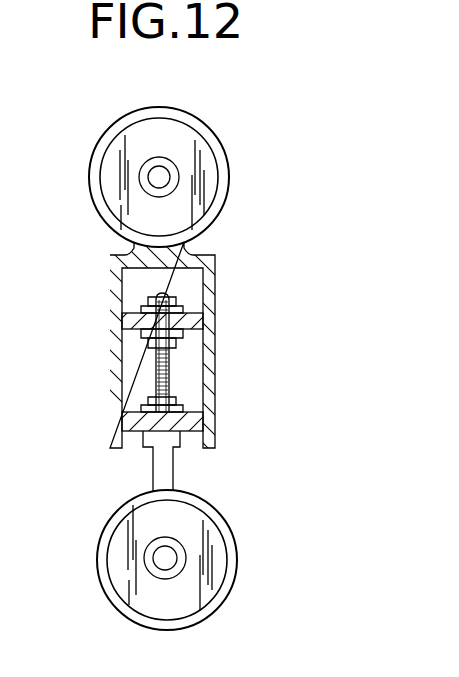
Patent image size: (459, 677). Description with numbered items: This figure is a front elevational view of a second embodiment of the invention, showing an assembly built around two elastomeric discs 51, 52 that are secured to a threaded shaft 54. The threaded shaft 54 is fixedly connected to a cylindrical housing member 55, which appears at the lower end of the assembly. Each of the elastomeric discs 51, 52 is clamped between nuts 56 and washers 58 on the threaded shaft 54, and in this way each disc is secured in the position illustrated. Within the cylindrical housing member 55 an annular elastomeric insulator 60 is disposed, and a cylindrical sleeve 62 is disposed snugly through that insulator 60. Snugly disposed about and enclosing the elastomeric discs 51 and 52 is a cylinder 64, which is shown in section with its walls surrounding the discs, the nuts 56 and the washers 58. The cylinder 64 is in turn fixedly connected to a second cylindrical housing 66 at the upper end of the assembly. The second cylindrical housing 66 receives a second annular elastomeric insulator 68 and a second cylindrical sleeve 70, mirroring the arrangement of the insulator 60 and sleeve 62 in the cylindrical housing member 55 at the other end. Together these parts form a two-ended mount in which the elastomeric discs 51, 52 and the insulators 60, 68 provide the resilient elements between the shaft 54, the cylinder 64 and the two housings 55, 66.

The elastomeric disc 51 is at (127, 320).
The elastomeric disc 52 is at (126, 416).
The threaded shaft 54 is at (157, 362).
The cylindrical housing member 55 is at (104, 546).
The nut 56 is at (183, 300).
The washer 58 is at (183, 311).
The annular elastomeric insulator 60 is at (148, 519).
The cylindrical sleeve 62 is at (155, 572).
The cylinder 64 is at (113, 277).
The second cylindrical housing 66 is at (127, 115).
The second annular elastomeric insulator 68 is at (121, 163).
The second cylindrical sleeve 70 is at (170, 180).